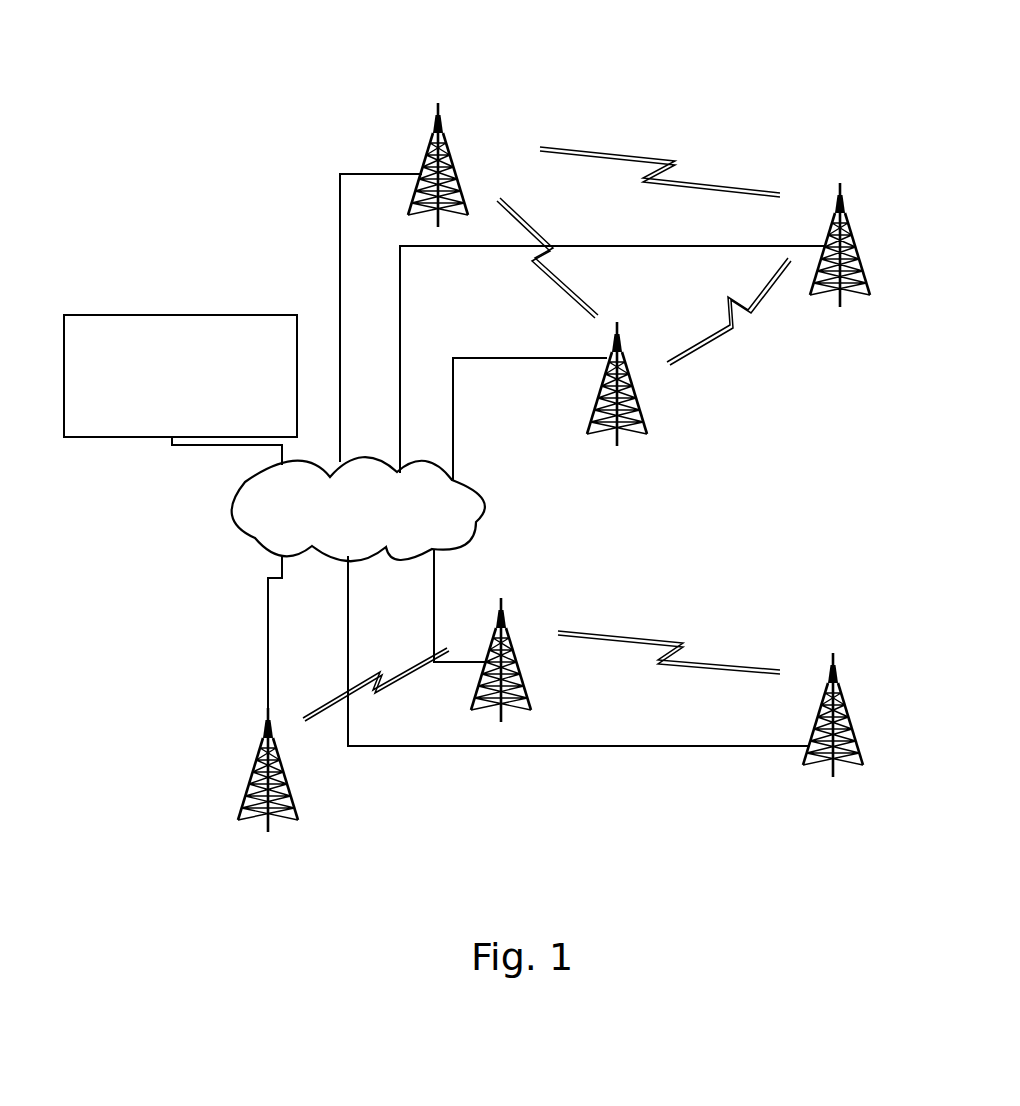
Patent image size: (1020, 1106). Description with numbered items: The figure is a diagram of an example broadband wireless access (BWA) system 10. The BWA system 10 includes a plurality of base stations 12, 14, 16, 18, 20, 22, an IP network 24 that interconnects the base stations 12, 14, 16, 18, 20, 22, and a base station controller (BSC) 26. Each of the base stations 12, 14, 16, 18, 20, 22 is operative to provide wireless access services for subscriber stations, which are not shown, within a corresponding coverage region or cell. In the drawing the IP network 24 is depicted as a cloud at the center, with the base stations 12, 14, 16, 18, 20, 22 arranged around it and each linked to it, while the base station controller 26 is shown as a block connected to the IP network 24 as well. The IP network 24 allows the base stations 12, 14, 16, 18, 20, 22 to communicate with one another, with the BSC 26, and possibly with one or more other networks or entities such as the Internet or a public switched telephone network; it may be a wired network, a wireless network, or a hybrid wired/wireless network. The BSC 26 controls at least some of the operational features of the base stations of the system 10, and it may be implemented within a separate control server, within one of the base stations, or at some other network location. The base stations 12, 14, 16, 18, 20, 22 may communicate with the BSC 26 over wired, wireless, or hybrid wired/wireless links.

The broadband wireless access (BWA) system 10 is at (254, 65).
The base station 12 is at (428, 148).
The base station 14 is at (852, 237).
The base station 16 is at (635, 430).
The base station 18 is at (523, 702).
The base station 20 is at (845, 715).
The base station 22 is at (255, 768).
The IP network 24 is at (242, 530).
The base station controller (BSC) 26 is at (203, 315).